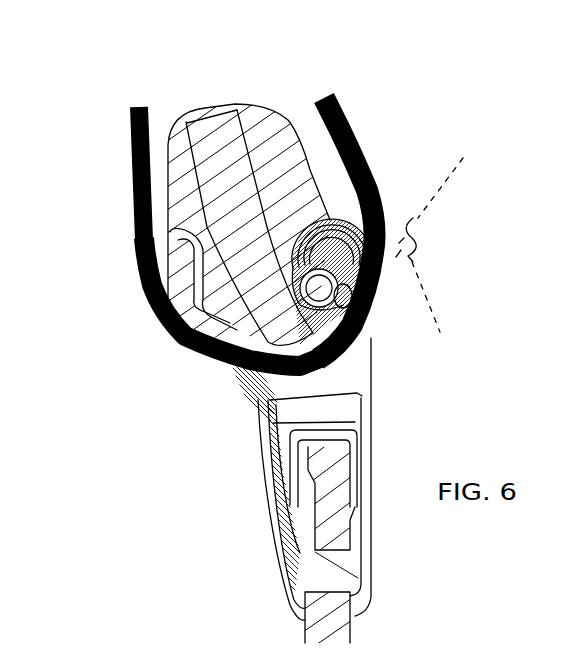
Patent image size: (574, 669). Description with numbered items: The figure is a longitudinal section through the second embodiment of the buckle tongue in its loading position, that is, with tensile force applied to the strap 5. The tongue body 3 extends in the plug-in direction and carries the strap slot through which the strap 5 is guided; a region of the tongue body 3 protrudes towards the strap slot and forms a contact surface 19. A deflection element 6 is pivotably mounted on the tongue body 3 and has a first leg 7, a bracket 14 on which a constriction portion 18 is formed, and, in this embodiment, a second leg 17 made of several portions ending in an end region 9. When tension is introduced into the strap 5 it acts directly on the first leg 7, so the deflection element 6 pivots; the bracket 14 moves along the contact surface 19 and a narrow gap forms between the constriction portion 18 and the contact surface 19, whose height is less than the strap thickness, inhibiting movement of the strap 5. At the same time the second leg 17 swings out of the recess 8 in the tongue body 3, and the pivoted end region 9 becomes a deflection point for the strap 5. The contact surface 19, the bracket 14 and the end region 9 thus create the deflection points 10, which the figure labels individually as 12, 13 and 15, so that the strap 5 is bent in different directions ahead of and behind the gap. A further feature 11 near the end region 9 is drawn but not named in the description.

The tongue body 3 is at (233, 103).
The strap 5 is at (343, 110).
The deflection element 6 is at (180, 280).
The first leg 7 is at (180, 255).
The recess 8 is at (325, 240).
The end region 9 is at (368, 192).
The deflection points 10 is at (259, 232).
The sealing edge 11 is at (415, 252).
The sealing lip 12 is at (395, 222).
The sealing section 13 is at (300, 372).
The bracket 14 is at (273, 357).
The sealing section 15 is at (172, 352).
The second leg 17 is at (347, 217).
The constriction portion 18 is at (270, 363).
The contact surface 19 is at (355, 326).